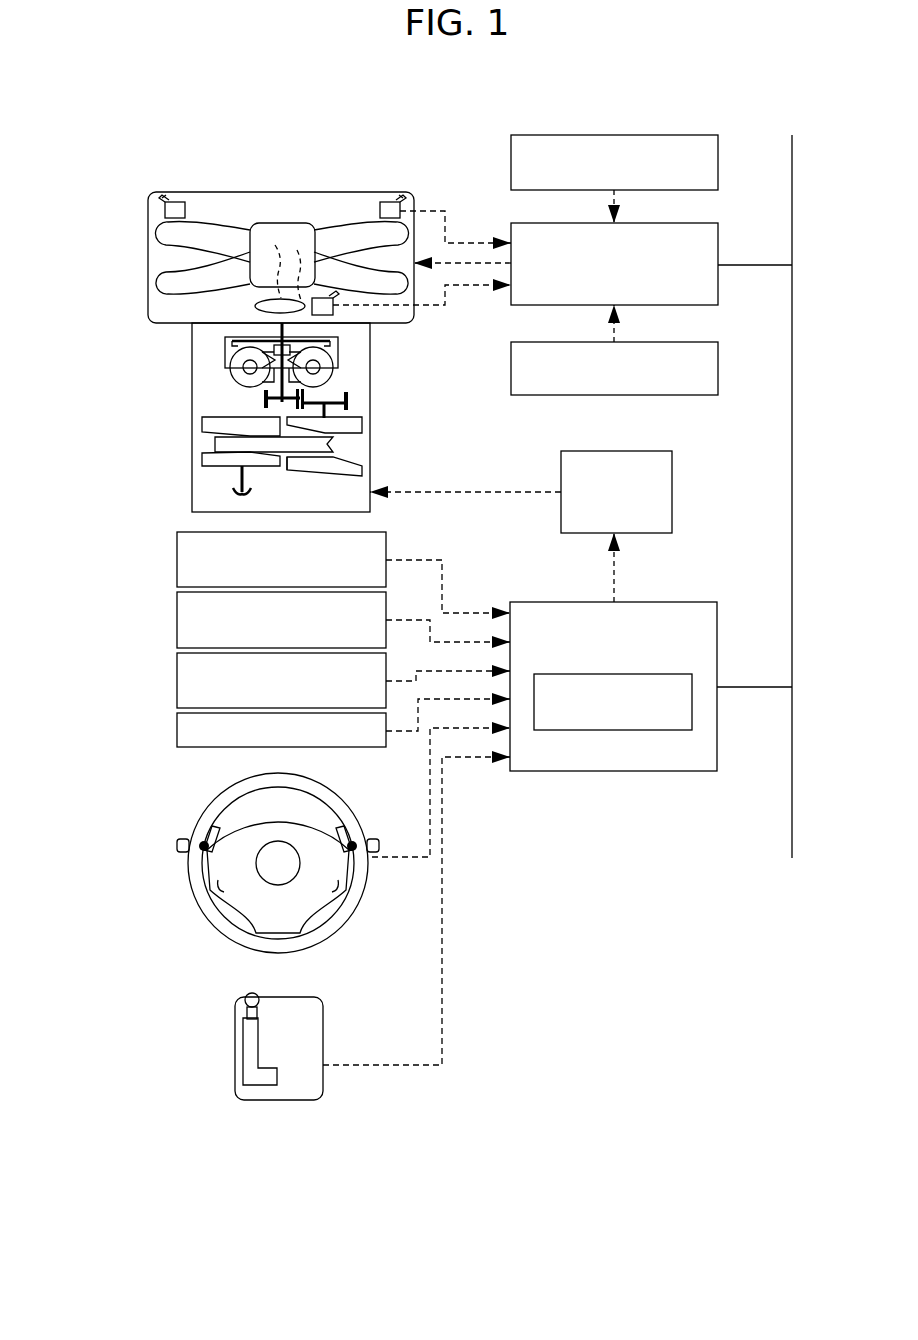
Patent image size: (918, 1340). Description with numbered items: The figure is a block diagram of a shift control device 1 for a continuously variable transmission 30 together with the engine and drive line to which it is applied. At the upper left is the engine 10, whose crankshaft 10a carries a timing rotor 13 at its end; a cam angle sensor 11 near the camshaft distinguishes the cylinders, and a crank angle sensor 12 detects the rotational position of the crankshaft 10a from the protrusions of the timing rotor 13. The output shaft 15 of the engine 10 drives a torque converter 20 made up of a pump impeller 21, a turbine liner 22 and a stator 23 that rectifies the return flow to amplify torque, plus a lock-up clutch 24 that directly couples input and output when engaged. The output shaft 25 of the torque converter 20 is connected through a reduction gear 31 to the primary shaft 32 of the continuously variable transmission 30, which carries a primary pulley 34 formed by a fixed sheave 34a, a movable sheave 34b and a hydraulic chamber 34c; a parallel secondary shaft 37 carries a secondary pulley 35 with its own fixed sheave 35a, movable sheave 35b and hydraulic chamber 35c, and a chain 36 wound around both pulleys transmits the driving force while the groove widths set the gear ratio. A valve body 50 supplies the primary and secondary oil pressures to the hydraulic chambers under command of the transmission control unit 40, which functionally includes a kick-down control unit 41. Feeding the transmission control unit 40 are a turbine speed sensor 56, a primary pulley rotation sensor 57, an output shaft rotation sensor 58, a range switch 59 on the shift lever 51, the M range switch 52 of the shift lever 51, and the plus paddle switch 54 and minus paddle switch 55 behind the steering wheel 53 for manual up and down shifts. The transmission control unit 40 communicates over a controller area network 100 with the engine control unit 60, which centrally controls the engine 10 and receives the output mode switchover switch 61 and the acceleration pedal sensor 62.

The shift control device 1 is at (703, 465).
The engine 10 is at (148, 245).
The crankshaft 10a is at (281, 255).
The cam angle sensor 11 is at (176, 202).
The crank angle sensor 12 is at (340, 313).
The timing rotor 13 is at (297, 292).
The output shaft 15 is at (281, 332).
The torque converter 20 is at (97, 330).
The pump impeller 21 is at (226, 370).
The turbine liner 22 is at (226, 346).
The stator 23 is at (228, 362).
The lock-up clutch 24 is at (335, 352).
The output shaft 25 is at (320, 388).
The continuously variable transmission 30 is at (370, 500).
The reduction gear 31 is at (258, 403).
The primary shaft 32 is at (335, 410).
The primary pulley 34 is at (450, 420).
The fixed sheave 34a is at (362, 428).
The movable sheave 34b is at (350, 455).
The hydraulic chamber 34c is at (340, 472).
The secondary pulley 35 is at (113, 416).
The fixed sheave 35a is at (203, 465).
The movable sheave 35b is at (203, 437).
The hydraulic chamber 35c is at (232, 424).
The chain 36 is at (216, 446).
The secondary shaft 37 is at (238, 482).
The transmission control unit 40 is at (717, 628).
The kick-down control unit 41 is at (692, 700).
The valve body 50 is at (672, 493).
The shift lever 51 is at (244, 1003).
The M range switch 52 is at (273, 1086).
The steering wheel 53 is at (196, 902).
The plus paddle switch 54 is at (343, 837).
The minus paddle switch 55 is at (211, 834).
The turbine speed sensor 56 is at (177, 562).
The primary pulley rotation sensor 57 is at (177, 622).
The output shaft rotation sensor 58 is at (177, 682).
The range switch 59 is at (177, 734).
The engine control unit 60 is at (718, 247).
The output mode switchover switch 61 is at (718, 165).
The acceleration pedal sensor 62 is at (718, 372).
The controller area network 100 is at (792, 455).